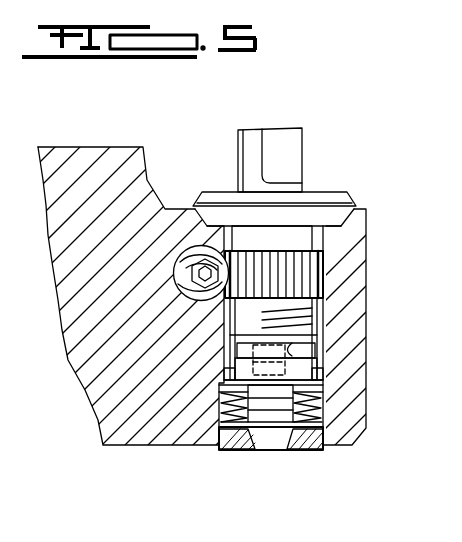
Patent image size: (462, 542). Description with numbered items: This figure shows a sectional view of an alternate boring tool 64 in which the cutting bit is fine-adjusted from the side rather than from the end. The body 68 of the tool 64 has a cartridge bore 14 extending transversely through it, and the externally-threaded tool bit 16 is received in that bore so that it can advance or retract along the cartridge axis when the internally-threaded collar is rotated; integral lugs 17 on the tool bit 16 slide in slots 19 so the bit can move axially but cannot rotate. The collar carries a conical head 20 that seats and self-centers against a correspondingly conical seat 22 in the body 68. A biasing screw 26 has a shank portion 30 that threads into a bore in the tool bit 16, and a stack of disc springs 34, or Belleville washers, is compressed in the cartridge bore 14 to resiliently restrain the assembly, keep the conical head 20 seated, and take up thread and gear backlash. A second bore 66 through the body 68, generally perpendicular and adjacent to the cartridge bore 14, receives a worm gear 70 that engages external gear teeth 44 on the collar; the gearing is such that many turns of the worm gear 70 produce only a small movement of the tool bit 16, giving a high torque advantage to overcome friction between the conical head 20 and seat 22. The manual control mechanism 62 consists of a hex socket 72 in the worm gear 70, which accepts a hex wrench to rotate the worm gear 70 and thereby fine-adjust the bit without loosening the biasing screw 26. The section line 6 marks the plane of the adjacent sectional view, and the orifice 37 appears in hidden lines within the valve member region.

The section line 6- 6 is at (293, 69).
The cartridge bore 14 is at (320, 341).
The tool bit 16 is at (288, 124).
The lugs 17 is at (323, 372).
The slots 19 is at (320, 306).
The conical head 20 is at (305, 213).
The conical seat 22 is at (346, 206).
The biasing screw 26 is at (255, 458).
The shank portion 30 is at (267, 416).
The disc springs 34 is at (323, 412).
The orifice 37 is at (310, 320).
The external gear teeth 44 is at (300, 272).
The control mechanism 62 is at (180, 300).
The tool 64 is at (403, 180).
The second bore 66 is at (200, 247).
The body 68 is at (147, 435).
The worm gear 70 is at (176, 281).
The hex socket 72 is at (196, 266).